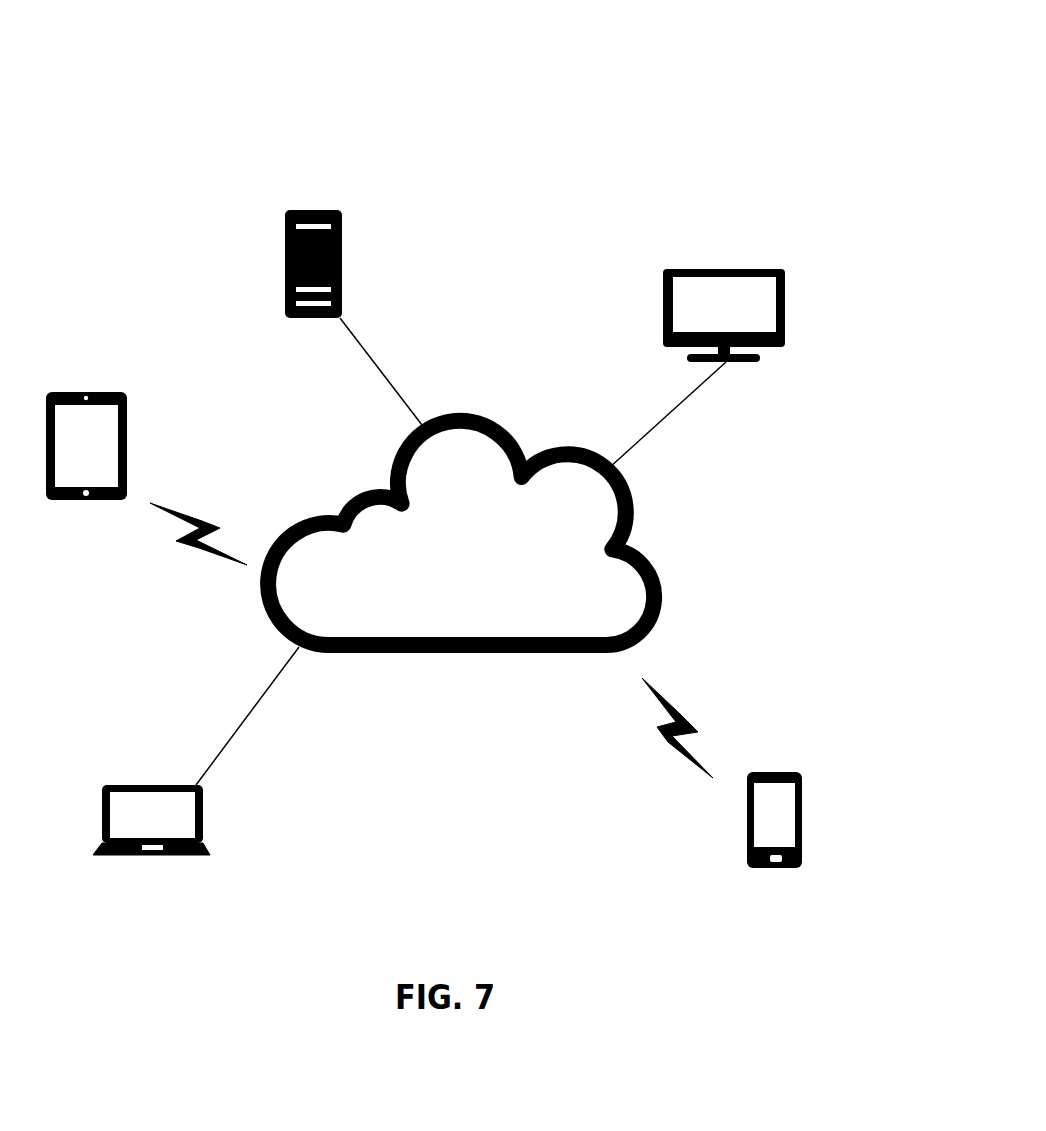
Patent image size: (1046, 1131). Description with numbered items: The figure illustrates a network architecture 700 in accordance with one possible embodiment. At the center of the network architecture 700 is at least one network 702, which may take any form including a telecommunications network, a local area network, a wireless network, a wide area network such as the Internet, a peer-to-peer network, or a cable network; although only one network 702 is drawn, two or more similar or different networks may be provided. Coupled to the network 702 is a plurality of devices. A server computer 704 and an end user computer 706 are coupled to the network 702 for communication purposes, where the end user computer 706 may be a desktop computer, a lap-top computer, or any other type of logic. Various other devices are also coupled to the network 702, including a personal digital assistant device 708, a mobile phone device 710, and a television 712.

The network architecture 700 is at (88, 84).
The network 702 is at (472, 654).
The server computer 704 is at (313, 208).
The end user computer 706 is at (148, 783).
The personal digital assistant (PDA) device 708 is at (88, 390).
The mobile phone device 710 is at (766, 771).
The television 712 is at (728, 268).